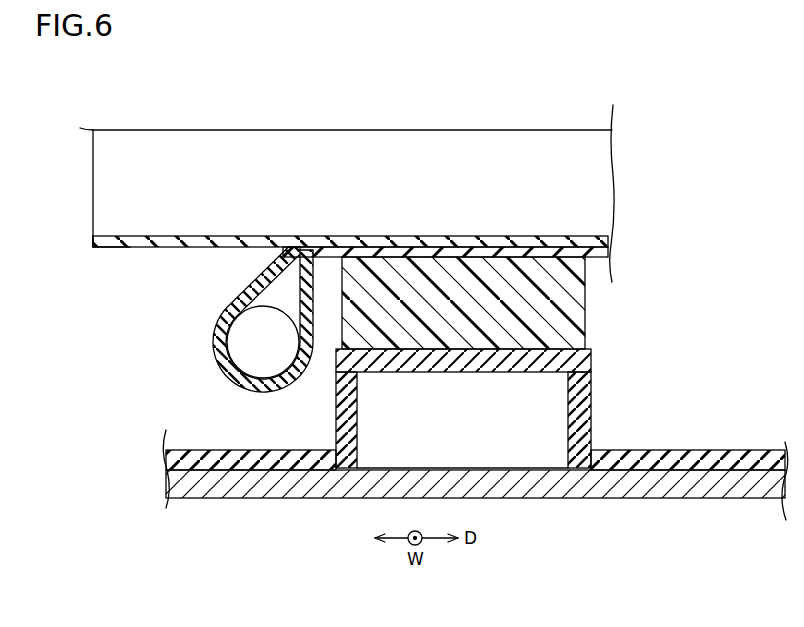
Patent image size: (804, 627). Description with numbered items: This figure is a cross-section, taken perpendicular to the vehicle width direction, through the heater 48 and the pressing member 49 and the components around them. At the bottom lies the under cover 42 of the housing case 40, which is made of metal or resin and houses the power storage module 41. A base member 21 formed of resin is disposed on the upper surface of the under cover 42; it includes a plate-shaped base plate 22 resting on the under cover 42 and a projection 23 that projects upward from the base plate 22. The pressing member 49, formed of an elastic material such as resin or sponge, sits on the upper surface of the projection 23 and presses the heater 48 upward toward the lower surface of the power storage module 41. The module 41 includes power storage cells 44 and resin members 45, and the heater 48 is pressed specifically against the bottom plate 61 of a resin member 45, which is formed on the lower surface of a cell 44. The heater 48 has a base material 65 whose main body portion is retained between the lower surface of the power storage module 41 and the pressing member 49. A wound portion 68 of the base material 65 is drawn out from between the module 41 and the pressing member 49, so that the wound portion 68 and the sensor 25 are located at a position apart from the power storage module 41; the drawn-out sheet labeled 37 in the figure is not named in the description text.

The base member 21 is at (475, 409).
The base plate 22 is at (605, 450).
The projection 23 is at (590, 384).
The sensor 25 is at (243, 362).
The sheet member 37 is at (226, 319).
The housing case 40 is at (475, 500).
The power storage module 41 is at (604, 216).
The under cover 42 is at (652, 492).
The power storage cell 44 is at (397, 193).
The resin member 45 is at (107, 271).
The heater 48 is at (547, 253).
The pressing member 49 is at (588, 305).
The bottom plate 61 is at (103, 249).
The base material 65 is at (445, 243).
The wound portion 68 is at (217, 323).